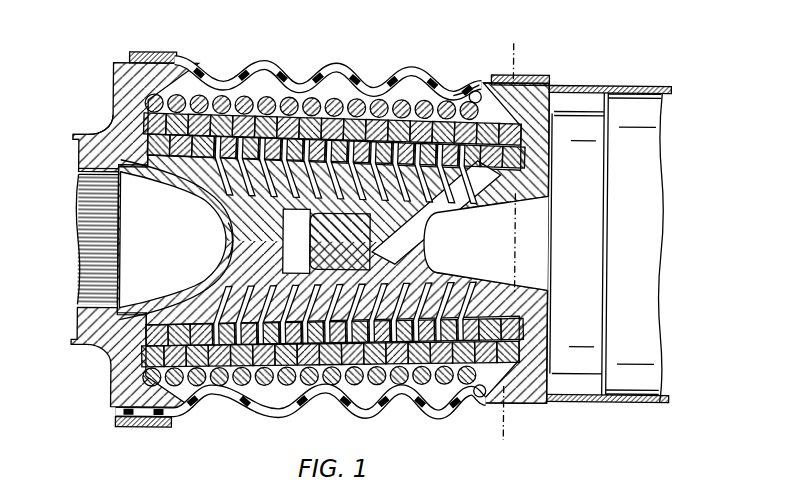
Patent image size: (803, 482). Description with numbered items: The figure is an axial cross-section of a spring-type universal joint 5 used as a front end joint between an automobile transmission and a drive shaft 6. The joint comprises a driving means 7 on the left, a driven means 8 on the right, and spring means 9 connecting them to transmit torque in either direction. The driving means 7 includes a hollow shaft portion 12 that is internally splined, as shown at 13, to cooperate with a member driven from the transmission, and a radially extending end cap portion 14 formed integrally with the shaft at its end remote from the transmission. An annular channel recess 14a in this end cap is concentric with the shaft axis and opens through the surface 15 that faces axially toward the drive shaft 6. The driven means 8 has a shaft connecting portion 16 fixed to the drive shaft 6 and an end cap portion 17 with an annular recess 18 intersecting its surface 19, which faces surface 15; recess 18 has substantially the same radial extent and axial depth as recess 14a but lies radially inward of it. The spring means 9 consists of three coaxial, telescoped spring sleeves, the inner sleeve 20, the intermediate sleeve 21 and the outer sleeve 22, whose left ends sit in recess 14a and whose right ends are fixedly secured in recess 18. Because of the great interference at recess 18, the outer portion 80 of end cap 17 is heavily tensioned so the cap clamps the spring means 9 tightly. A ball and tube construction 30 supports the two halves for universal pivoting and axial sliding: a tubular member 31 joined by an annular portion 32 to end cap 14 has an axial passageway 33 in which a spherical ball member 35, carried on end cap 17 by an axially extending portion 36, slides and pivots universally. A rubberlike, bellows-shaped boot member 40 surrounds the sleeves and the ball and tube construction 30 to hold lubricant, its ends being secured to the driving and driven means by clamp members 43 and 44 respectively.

The universal joint 5 is at (355, 45).
The drive shaft 6 is at (512, 40).
The driving means 7 is at (88, 133).
The driven means 8 is at (571, 97).
The spring means 9 is at (262, 388).
The hollow shaft portion 12 is at (72, 140).
The splined portion 13 is at (78, 189).
The end cap portion 14 is at (116, 80).
The channel recess 14a is at (78, 171).
The surface 15 is at (165, 196).
The shaft connecting portion 16 is at (608, 89).
The end cap portion 17 is at (553, 78).
The annular recess 18 is at (473, 89).
The surface 19 is at (447, 91).
The inner spring sleeve 20 is at (112, 335).
The intermediate spring sleeve 21 is at (142, 354).
The outer spring sleeve 22 is at (140, 378).
The ball and tube construction 30 is at (207, 240).
The tubular member 31 is at (368, 173).
The annular portion 32 is at (200, 194).
The passageway 33 is at (232, 258).
The ball member 35 is at (318, 239).
The axially extending portion 36 is at (437, 249).
The boot member 40 is at (266, 58).
The clamp member 43 is at (157, 53).
The clamp member 44 is at (533, 72).
The outer portion 80 is at (480, 393).